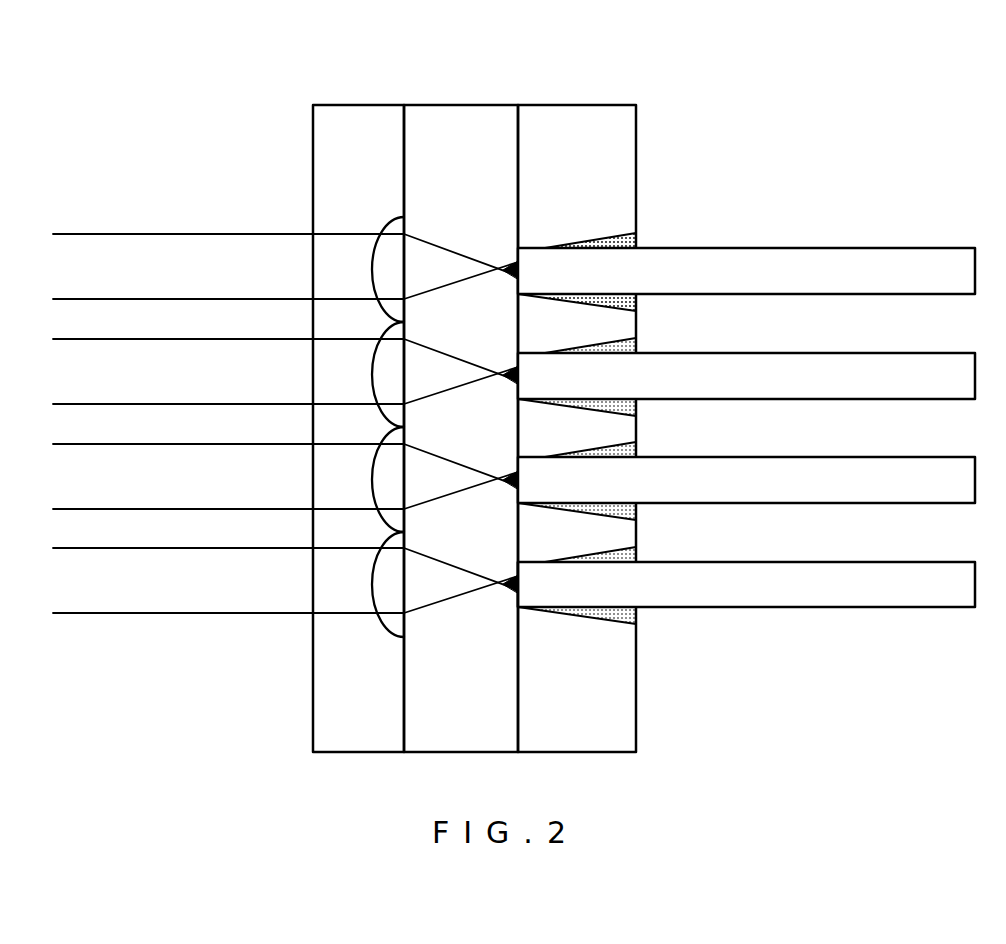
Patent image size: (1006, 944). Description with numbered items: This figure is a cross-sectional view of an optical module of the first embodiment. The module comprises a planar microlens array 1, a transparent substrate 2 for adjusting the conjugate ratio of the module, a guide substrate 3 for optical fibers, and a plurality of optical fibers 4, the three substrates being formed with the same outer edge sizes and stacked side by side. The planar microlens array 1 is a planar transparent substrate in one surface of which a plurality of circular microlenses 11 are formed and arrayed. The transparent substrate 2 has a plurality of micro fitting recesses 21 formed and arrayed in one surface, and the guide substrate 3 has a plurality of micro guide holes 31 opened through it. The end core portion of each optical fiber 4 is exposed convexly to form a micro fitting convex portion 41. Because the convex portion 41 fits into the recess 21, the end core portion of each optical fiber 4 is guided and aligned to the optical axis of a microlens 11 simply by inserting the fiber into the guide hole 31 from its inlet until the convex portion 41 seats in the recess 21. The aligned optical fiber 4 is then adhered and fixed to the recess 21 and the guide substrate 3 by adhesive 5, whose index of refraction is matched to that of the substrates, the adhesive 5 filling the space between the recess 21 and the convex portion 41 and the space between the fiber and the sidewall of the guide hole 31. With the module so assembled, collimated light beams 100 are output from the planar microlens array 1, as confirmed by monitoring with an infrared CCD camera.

The planar microlens array 1 is at (355, 115).
The microlens 11 is at (382, 270).
The transparent substrate 2 is at (460, 115).
The micro fitting recess 21 is at (506, 262).
The guide substrate 3 is at (577, 115).
The micro guide hole 31 is at (597, 237).
The optical fiber 4 is at (885, 248).
The micro fitting convex portion 41 is at (512, 585).
The adhesive 5 is at (638, 240).
The collimated light beams 100 is at (165, 588).